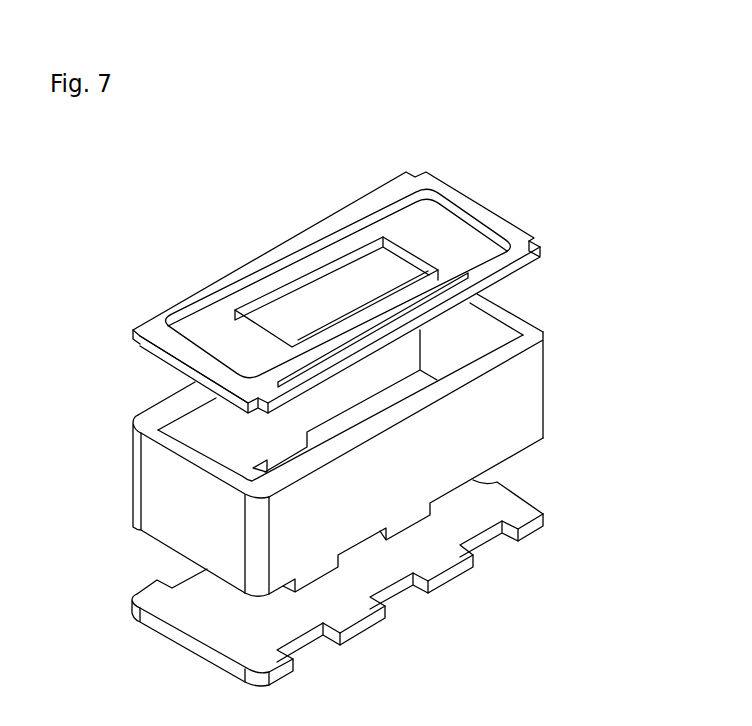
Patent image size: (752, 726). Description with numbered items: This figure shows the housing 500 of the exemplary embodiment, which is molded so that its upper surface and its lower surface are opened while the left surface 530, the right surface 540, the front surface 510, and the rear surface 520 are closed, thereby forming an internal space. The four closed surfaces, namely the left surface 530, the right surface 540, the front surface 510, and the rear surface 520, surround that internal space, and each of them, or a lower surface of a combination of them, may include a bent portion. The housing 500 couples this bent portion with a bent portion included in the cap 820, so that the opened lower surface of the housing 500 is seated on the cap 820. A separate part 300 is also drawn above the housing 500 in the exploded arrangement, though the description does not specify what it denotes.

The cover / lid 300 is at (452, 190).
The housing 500 is at (557, 369).
The front surface 510 is at (190, 417).
The rear surface 520 is at (507, 398).
The left surface 530 is at (152, 483).
The right surface 540 is at (493, 333).
The cap 820 is at (533, 503).